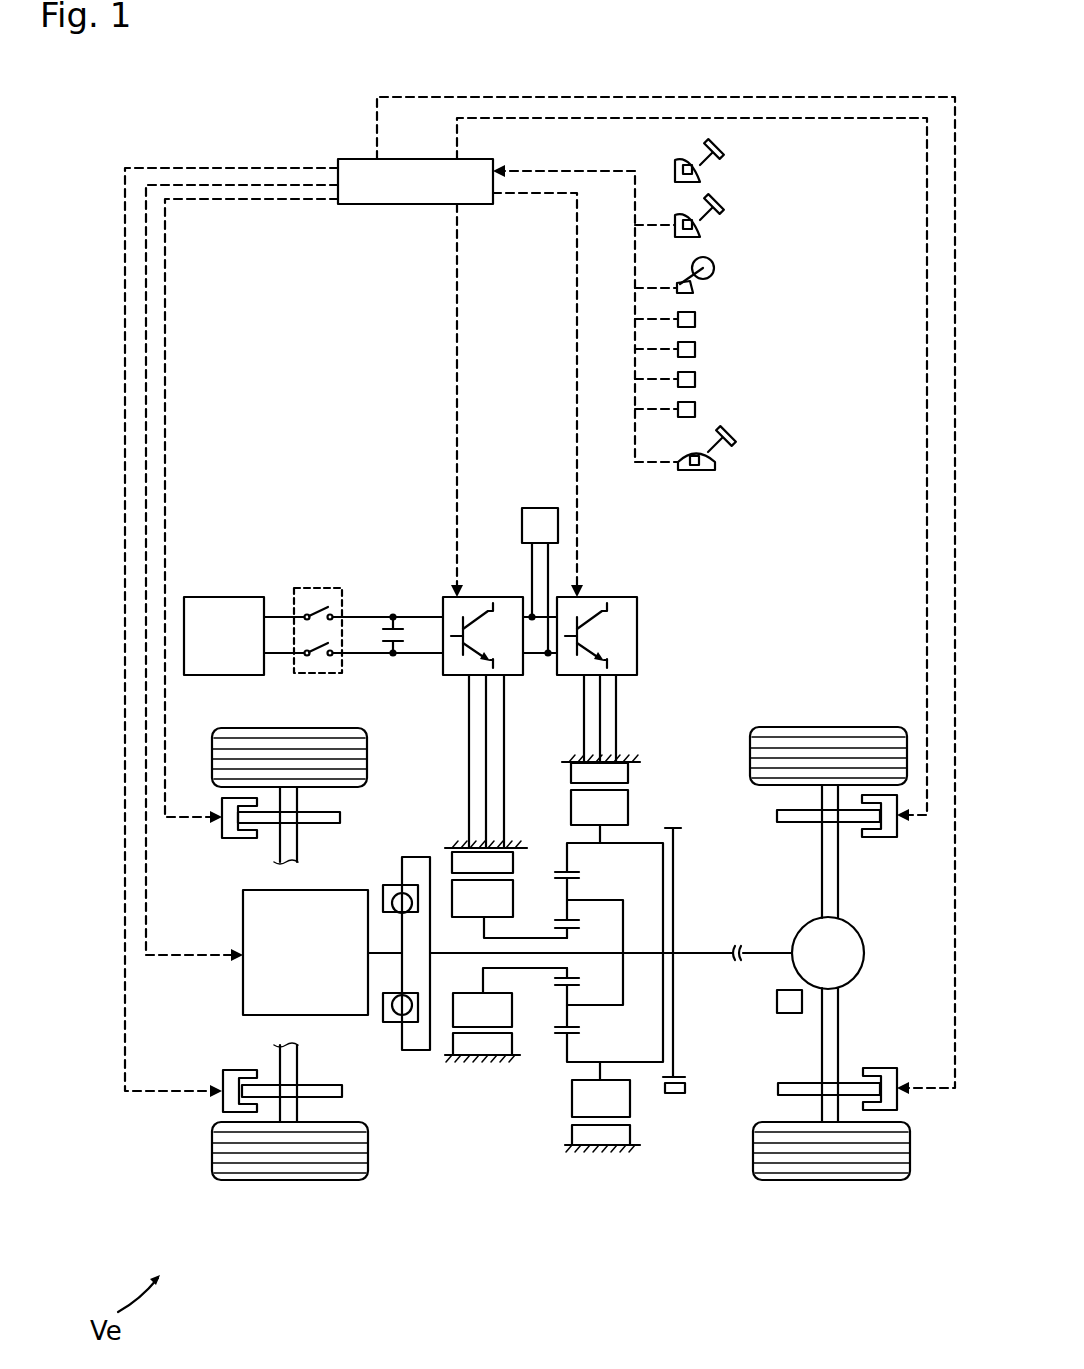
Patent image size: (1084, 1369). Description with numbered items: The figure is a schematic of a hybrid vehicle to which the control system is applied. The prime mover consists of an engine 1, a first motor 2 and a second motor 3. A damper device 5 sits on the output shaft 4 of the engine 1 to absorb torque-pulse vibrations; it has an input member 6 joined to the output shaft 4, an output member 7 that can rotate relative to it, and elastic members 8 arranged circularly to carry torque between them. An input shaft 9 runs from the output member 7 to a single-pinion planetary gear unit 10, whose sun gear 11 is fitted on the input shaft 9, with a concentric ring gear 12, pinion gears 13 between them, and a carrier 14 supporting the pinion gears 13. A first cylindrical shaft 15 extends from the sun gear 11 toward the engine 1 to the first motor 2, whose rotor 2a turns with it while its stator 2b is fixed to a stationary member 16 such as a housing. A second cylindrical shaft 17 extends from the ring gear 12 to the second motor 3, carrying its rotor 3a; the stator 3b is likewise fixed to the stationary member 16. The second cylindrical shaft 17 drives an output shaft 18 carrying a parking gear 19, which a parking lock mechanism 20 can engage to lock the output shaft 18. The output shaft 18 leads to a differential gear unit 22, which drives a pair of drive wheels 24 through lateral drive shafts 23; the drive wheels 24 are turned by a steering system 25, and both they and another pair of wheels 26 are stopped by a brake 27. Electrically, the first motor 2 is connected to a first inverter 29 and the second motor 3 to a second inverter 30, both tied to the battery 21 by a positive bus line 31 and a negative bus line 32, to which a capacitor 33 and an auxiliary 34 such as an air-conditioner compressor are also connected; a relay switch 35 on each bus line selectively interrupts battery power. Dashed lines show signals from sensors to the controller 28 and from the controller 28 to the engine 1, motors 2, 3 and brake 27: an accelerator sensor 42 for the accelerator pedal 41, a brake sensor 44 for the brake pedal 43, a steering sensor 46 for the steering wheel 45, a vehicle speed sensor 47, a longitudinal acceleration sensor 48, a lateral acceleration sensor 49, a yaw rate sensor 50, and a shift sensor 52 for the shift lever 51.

The engine 1 is at (243, 984).
The first motor 2 is at (452, 838).
The rotor 2a is at (468, 1000).
The stator 2b is at (495, 1042).
The second motor 3 is at (645, 776).
The rotor 3a is at (580, 1100).
The stator 3b is at (625, 1135).
The output shaft 4 is at (378, 950).
The damper device 5 is at (395, 1048).
The input member 6 is at (385, 1012).
The output member 7 is at (416, 1050).
The elastic members 8 is at (393, 885).
The input shaft 9 is at (462, 952).
The single-pinion planetary gear unit 10 is at (560, 838).
The sun gear 11 is at (580, 979).
The ring gear 12 is at (555, 1034).
The pinion gears 13 is at (580, 1028).
The carrier 14 is at (620, 900).
The first cylindrical shaft 15 is at (552, 935).
The stationary member 16 is at (466, 1060).
The second cylindrical shaft 17 is at (655, 843).
The output shaft 18 is at (711, 950).
The parking gear 19 is at (680, 856).
The parking lock mechanism 20 is at (692, 1097).
The battery 21 is at (238, 597).
The differential gear unit 22 is at (865, 953).
The drive shafts 23 is at (822, 875).
The drive wheels 24 is at (822, 727).
The steering system 25 is at (777, 1003).
The wheels 26 is at (325, 728).
The brake 27 is at (235, 838).
The controller 28 is at (402, 205).
The first inverter 29 is at (490, 597).
The second inverter 30 is at (608, 597).
The positive bus line 31 is at (417, 617).
The negative bus line 32 is at (418, 653).
The capacitor 33 is at (388, 628).
The auxiliary 34 is at (540, 508).
The relay switch 35 is at (318, 588).
The accelerator pedal 41 is at (722, 152).
The accelerator sensor 42 is at (700, 176).
The brake pedal 43 is at (722, 207).
The brake sensor 44 is at (700, 231).
The steering wheel 45 is at (715, 267).
The steering sensor 46 is at (693, 290).
The vehicle speed sensor 47 is at (695, 320).
The longitudinal acceleration sensor 48 is at (695, 350).
The lateral acceleration sensor 49 is at (695, 380).
The yaw rate sensor 50 is at (695, 410).
The shift lever 51 is at (733, 440).
The shift sensor 52 is at (710, 465).